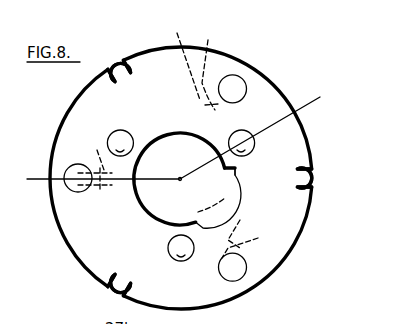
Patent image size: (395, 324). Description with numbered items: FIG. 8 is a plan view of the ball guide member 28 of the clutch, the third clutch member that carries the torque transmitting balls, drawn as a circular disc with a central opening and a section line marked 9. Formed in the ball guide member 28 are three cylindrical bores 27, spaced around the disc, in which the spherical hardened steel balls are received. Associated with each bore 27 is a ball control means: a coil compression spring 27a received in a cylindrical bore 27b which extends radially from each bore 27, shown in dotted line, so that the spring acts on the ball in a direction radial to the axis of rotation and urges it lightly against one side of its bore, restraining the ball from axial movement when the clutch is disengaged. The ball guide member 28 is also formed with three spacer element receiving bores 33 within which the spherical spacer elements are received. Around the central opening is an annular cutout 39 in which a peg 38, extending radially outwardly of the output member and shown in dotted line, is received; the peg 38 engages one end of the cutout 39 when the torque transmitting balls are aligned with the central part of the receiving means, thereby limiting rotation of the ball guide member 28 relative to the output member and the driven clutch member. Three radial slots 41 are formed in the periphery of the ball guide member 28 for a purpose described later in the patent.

The ball guide member 28 is at (306, 233).
The radial slot 41 is at (121, 62).
The peg 38 is at (206, 213).
The annular cutout 39 is at (238, 184).
The cylindrical bore 27 is at (236, 74).
The spacer element receiving bore 33 is at (118, 130).
The coil compression spring 27a is at (178, 134).
The cylindrical bore 27b is at (169, 134).
The section line 9 is at (320, 97).